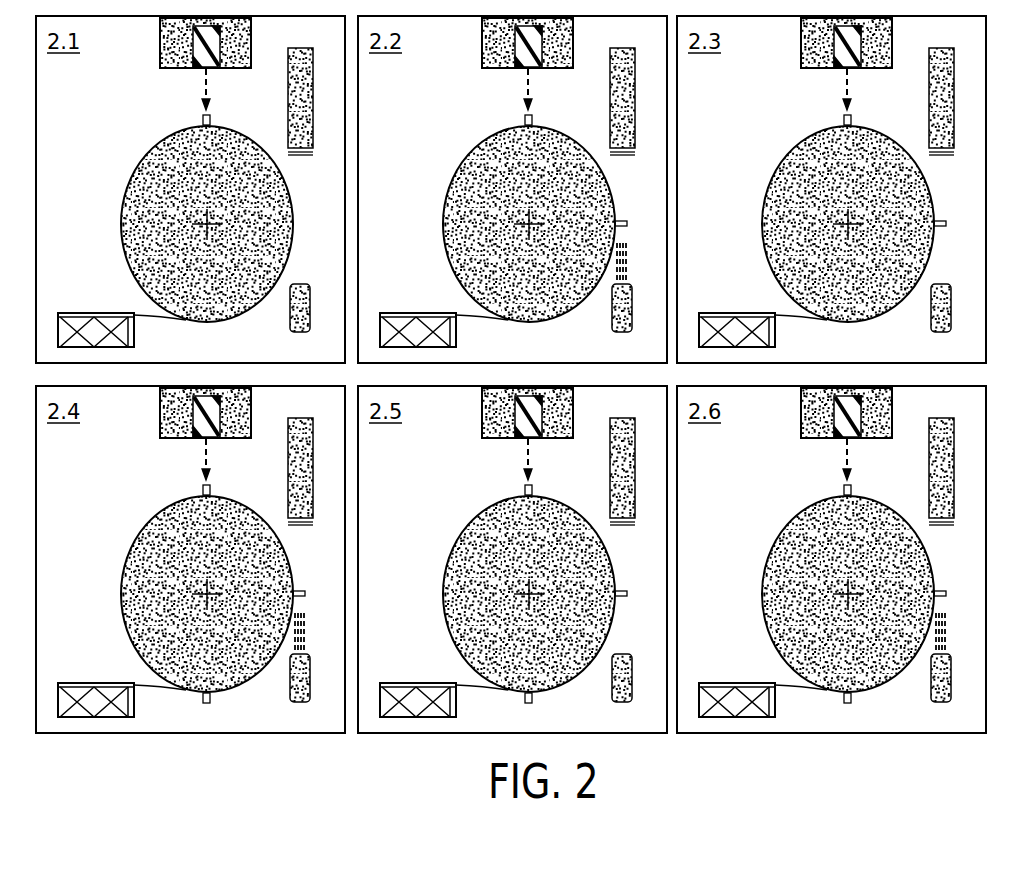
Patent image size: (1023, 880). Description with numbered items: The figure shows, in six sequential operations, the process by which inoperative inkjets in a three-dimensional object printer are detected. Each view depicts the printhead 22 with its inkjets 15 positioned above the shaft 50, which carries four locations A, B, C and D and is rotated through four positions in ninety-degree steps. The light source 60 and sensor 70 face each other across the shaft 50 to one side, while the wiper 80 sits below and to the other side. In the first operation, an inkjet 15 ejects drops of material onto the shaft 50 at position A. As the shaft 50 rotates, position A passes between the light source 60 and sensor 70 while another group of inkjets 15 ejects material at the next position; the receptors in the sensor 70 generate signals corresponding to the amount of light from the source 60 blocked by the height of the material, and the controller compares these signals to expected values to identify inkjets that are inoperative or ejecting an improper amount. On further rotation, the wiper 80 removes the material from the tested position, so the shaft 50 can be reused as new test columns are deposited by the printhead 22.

The inkjet 15 is at (150, 40).
The printhead 22 is at (116, 40).
The shaft 50 is at (84, 165).
The light source 60 is at (243, 306).
The sensor 70 is at (246, 98).
The wiper 80 is at (40, 289).